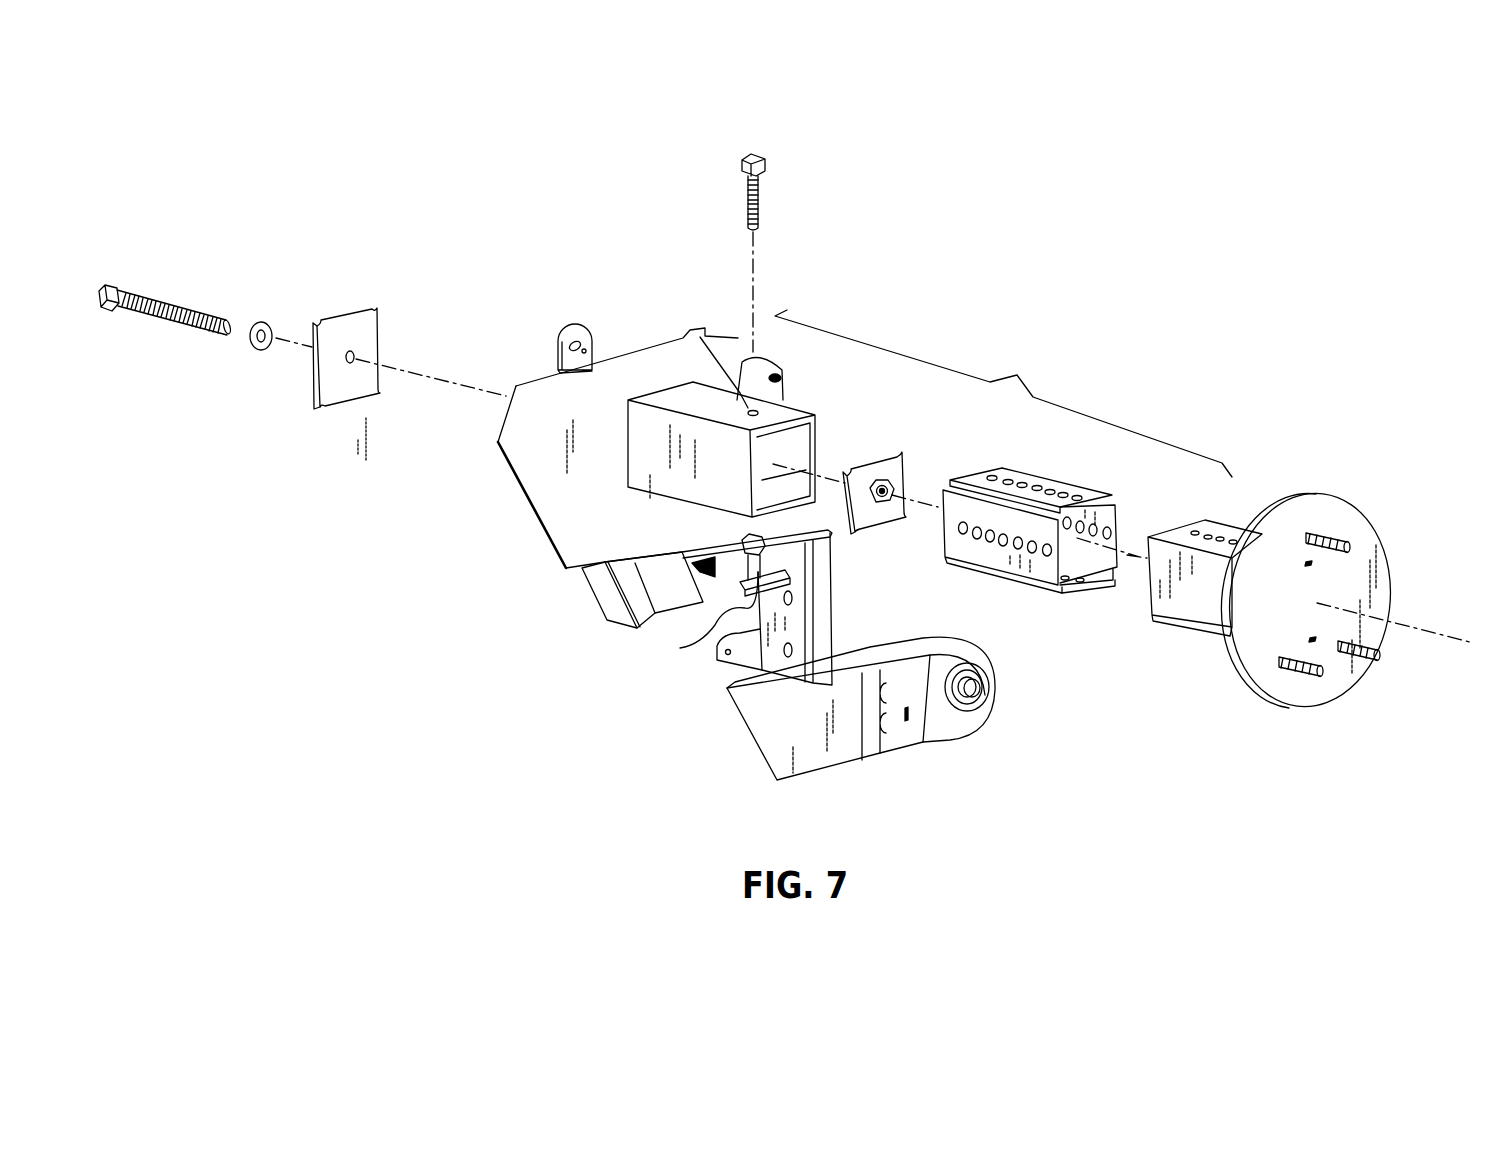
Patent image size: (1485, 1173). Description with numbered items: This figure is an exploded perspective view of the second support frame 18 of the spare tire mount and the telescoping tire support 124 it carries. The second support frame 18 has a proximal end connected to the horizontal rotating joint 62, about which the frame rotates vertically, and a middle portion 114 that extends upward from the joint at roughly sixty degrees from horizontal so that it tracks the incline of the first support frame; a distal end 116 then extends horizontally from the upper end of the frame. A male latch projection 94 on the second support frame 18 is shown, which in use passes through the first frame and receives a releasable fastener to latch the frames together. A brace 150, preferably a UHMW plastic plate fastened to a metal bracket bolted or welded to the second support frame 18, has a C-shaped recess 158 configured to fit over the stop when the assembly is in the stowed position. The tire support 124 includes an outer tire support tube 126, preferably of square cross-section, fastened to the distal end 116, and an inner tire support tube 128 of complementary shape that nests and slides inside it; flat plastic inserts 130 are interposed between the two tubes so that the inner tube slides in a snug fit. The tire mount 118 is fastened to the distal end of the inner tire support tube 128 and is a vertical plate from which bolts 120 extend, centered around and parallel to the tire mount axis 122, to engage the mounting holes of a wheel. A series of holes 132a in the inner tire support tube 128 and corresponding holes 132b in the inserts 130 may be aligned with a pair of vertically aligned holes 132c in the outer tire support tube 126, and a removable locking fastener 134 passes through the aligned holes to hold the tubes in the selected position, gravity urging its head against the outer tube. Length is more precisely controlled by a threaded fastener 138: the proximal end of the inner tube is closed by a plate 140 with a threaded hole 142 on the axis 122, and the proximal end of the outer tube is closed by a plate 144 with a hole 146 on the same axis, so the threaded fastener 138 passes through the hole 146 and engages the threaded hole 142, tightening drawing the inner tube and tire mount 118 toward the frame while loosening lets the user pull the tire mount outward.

The second support frame 18 is at (722, 530).
The horizontal rotating joint 62 is at (977, 690).
The male projection for latch 94 is at (577, 322).
The middle portion of second support frame 114 is at (866, 629).
The distal end of second support frame 116 is at (514, 486).
The tire mount 118 is at (1358, 523).
The bolts 120 is at (1319, 672).
The axis of tire mount 122 is at (437, 378).
The tire support 124 is at (1003, 393).
The outer tire support tube 126 is at (804, 399).
The inner tire support tube 128 is at (1185, 607).
The plastic inserts 130 is at (1037, 478).
The holes in inner tire support tube 132a is at (1197, 530).
The holes in inserts 132b is at (993, 477).
The holes in outer tire support tube 132c is at (752, 411).
The locking fastener 134 is at (762, 190).
The threaded fastener 138 is at (168, 302).
The plate on inner tire support tube 140 is at (872, 465).
The threaded hole 142 is at (890, 490).
The plate on outer tire support tube 144 is at (347, 323).
The hole in plate 146 is at (355, 356).
The brace 150 is at (758, 648).
The recess in brace 158 is at (727, 613).